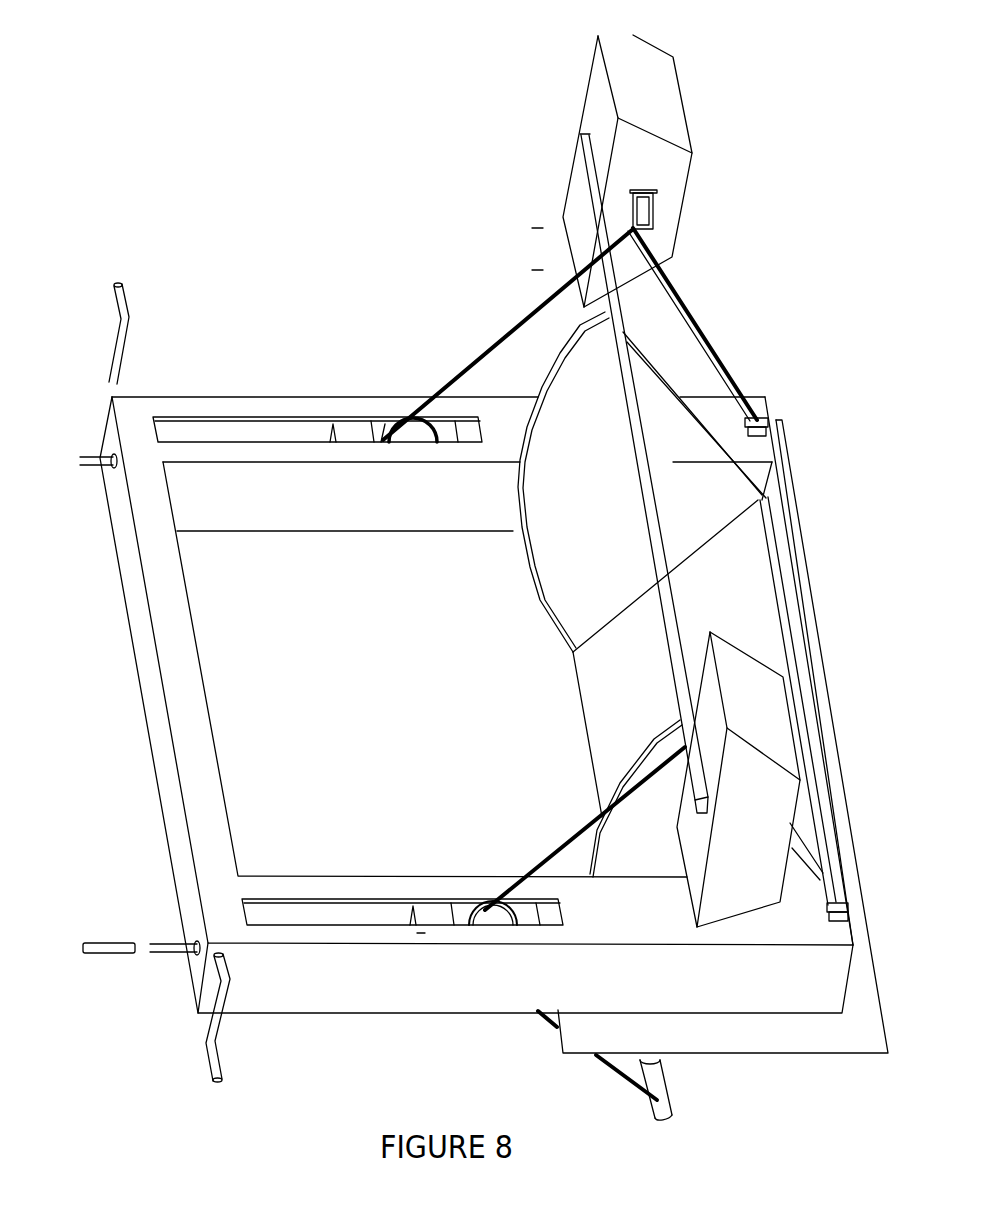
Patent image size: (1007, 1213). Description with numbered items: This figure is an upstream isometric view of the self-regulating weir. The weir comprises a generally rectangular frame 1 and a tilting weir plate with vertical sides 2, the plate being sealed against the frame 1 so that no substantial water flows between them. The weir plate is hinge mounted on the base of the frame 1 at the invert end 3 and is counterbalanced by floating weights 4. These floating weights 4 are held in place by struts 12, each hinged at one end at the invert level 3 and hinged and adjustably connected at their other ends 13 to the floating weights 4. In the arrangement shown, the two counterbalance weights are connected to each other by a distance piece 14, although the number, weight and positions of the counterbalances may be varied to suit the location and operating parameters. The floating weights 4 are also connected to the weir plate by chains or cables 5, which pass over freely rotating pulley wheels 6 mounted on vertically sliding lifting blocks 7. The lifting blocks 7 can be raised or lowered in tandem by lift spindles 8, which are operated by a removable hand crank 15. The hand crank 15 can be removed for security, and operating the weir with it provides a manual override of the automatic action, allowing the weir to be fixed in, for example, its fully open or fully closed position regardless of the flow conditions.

The frame 1 is at (152, 707).
The vertical sides 2 is at (590, 685).
The invert end 3 is at (775, 577).
The floating weights 4 is at (675, 118).
The chains or cables 5 is at (500, 333).
The pulley wheels 6 is at (410, 437).
The lifting blocks 7 is at (353, 430).
The lift spindles 8 is at (102, 468).
The struts 12 is at (732, 380).
The other ends 13 is at (640, 220).
The distance piece 14 is at (583, 148).
The hand crank 15 is at (125, 352).